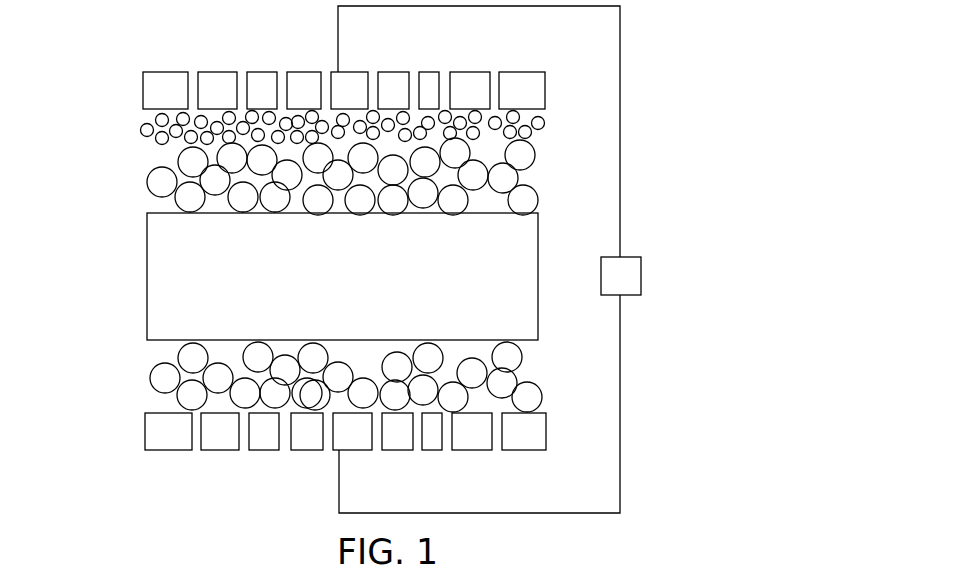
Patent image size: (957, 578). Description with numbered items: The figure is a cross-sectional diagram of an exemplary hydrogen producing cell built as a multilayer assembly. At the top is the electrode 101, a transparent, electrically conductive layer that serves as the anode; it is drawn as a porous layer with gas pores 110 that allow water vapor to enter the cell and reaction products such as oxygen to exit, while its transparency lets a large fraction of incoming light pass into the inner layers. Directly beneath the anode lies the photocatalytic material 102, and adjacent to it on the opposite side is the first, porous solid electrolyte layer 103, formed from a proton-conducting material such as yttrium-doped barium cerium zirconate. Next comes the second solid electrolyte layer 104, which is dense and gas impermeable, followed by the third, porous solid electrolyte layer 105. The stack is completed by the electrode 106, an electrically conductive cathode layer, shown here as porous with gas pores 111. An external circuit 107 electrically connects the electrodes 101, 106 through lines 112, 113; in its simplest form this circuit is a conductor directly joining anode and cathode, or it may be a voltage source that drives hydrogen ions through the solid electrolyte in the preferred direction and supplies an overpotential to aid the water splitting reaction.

The electrode 101 is at (143, 87).
The photocatalytic material 102 is at (132, 148).
The solid electrolyte layer 103 is at (132, 213).
The solid electrolyte layer 104 is at (147, 271).
The solid electrolyte layer 105 is at (132, 407).
The electrode 106 is at (145, 431).
The external circuit 107 is at (641, 271).
The gas pores 110 is at (238, 64).
The gas pores 111 is at (240, 460).
The line 112 is at (620, 410).
The line 113 is at (620, 108).